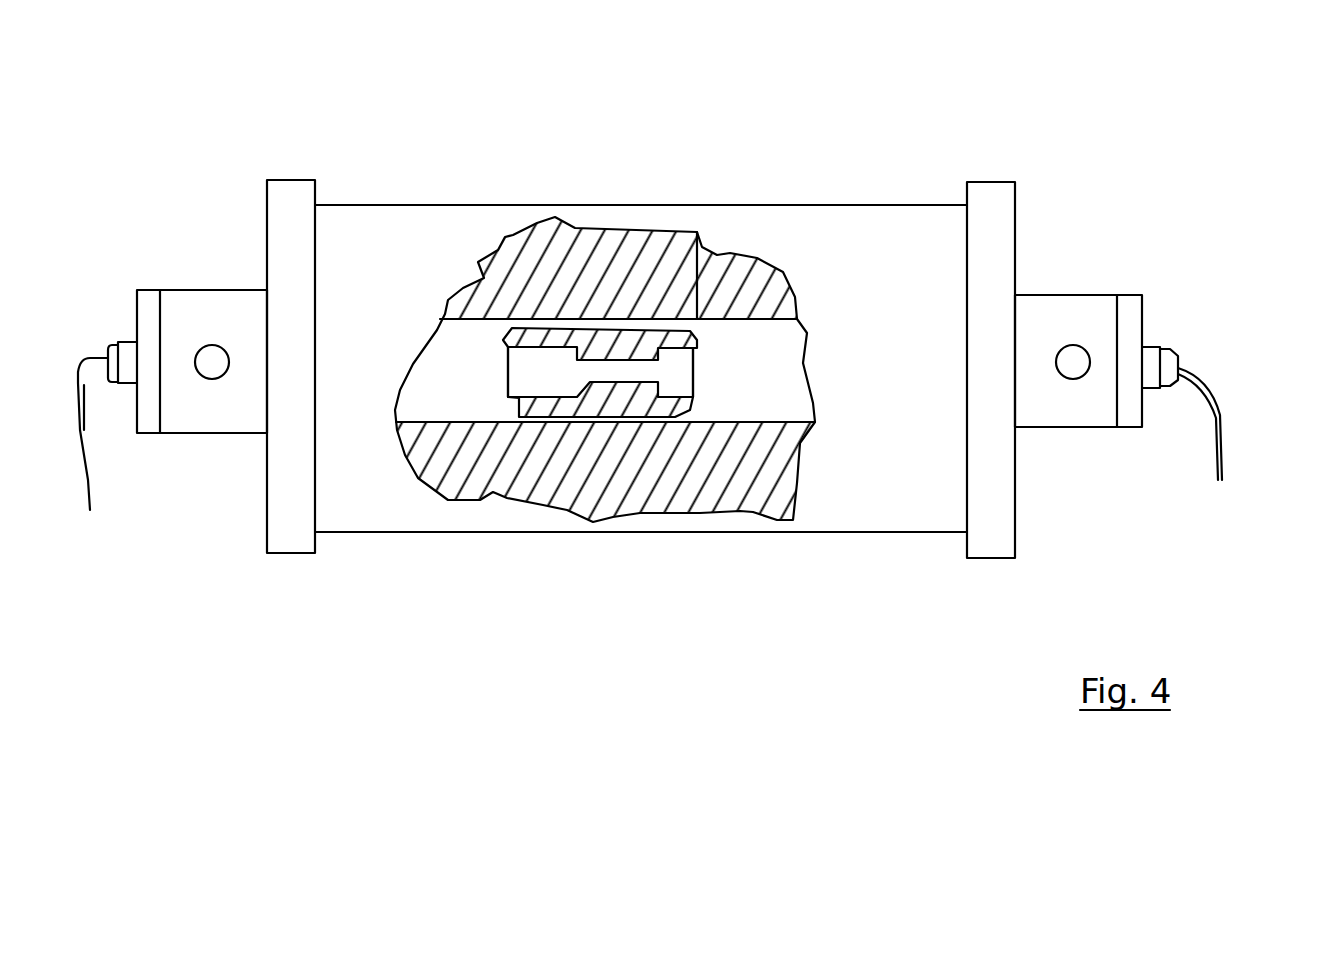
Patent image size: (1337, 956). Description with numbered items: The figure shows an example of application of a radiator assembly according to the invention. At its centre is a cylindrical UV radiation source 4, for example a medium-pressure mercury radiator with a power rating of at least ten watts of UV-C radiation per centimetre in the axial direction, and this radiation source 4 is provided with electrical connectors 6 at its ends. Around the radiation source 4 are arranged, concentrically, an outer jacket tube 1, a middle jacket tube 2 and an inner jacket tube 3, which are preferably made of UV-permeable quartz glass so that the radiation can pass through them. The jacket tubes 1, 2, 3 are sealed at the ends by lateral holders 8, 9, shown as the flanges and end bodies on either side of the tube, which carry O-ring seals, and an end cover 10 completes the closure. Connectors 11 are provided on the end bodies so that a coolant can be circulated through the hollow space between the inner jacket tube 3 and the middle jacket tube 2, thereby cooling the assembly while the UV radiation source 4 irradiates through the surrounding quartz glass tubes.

The outer jacket tube 1 is at (908, 205).
The middle jacket tube 2 is at (790, 268).
The inner jacket tube 3 is at (570, 327).
The UV radiation source 4 is at (698, 233).
The electrical connectors 6 is at (1278, 386).
The lateral holder 8 is at (267, 180).
The lateral holder 9 is at (237, 289).
The end cover 10 is at (148, 289).
The connectors 11 is at (212, 380).